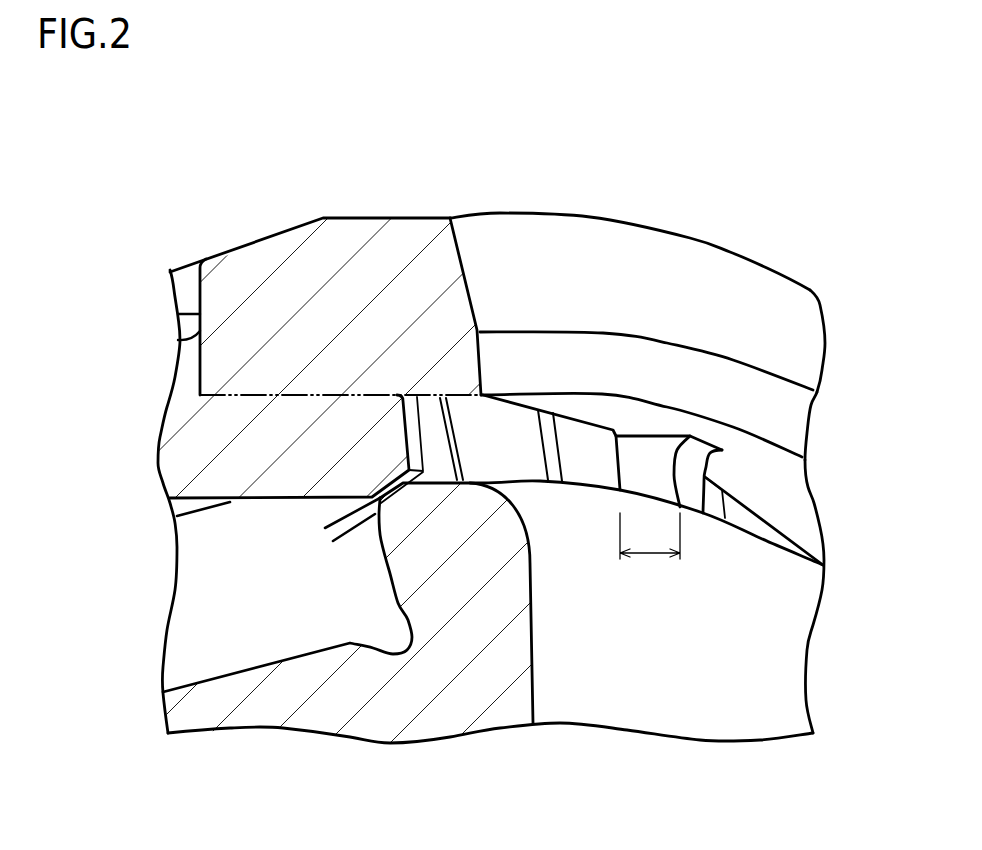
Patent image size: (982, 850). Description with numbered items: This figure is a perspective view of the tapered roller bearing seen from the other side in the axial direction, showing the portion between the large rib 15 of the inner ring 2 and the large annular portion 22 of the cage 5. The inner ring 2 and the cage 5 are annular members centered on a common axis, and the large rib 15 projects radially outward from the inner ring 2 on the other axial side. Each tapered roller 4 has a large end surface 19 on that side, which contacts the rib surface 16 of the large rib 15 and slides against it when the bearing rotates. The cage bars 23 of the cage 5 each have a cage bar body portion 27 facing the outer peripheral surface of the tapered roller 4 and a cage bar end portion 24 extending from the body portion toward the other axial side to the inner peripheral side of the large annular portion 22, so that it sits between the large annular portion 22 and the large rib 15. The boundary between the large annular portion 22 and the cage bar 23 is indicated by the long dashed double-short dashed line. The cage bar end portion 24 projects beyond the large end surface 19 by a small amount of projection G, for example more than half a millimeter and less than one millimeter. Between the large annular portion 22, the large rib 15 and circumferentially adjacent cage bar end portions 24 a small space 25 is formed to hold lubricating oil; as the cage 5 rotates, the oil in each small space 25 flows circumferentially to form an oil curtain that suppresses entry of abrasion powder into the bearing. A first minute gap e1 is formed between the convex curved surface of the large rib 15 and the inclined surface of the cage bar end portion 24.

The inner ring 2 is at (746, 693).
The tapered roller 4 is at (509, 410).
The cage 5 is at (759, 249).
The large rib 15 is at (572, 538).
The rib surface 16 is at (383, 558).
The large end surface 19 is at (583, 450).
The large annular portion 22 is at (347, 260).
The cage bar 23 is at (189, 428).
The cage bar end portion 24 is at (415, 442).
The small space 25 is at (634, 417).
The cage bar body portion 27 is at (183, 474).
The amount of projection G is at (650, 553).
The first minute gap e1 is at (307, 510).